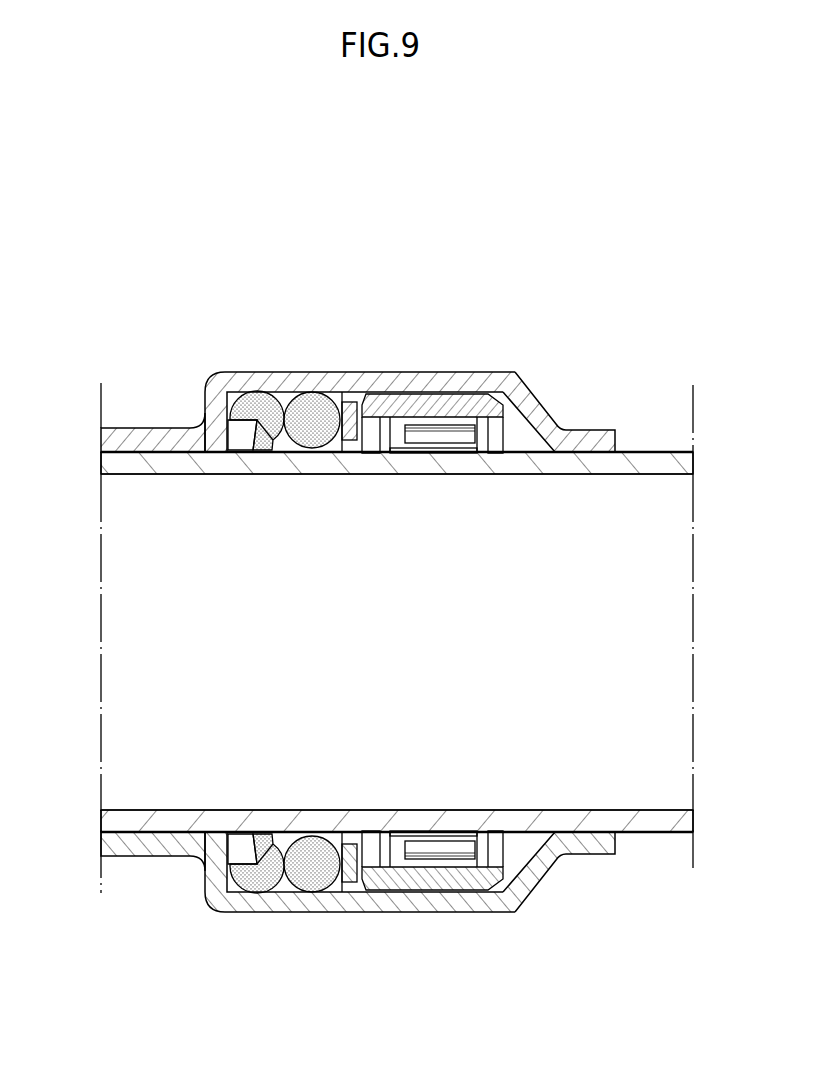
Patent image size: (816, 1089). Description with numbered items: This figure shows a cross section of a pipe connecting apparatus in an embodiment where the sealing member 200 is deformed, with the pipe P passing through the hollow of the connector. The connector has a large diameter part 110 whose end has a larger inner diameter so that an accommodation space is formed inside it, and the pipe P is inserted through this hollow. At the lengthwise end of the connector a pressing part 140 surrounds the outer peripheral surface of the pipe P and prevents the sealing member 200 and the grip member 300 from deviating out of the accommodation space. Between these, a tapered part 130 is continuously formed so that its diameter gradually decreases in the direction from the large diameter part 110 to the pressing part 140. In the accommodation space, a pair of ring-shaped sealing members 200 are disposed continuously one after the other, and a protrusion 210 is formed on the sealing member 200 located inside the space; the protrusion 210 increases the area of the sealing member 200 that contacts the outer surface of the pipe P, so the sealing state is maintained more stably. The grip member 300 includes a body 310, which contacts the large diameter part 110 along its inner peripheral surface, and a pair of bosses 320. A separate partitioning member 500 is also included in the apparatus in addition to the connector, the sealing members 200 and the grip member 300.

The large diameter part 110 is at (318, 372).
The tapered part 130 is at (540, 405).
The pressing part 140 is at (590, 432).
The protrusion 210 is at (200, 428).
The sealing member 200 is at (247, 403).
The grip member 300 is at (432, 330).
The body 310 is at (436, 437).
The bosses 320 is at (490, 372).
The partitioning member 500 is at (347, 403).
The pipe P is at (652, 463).